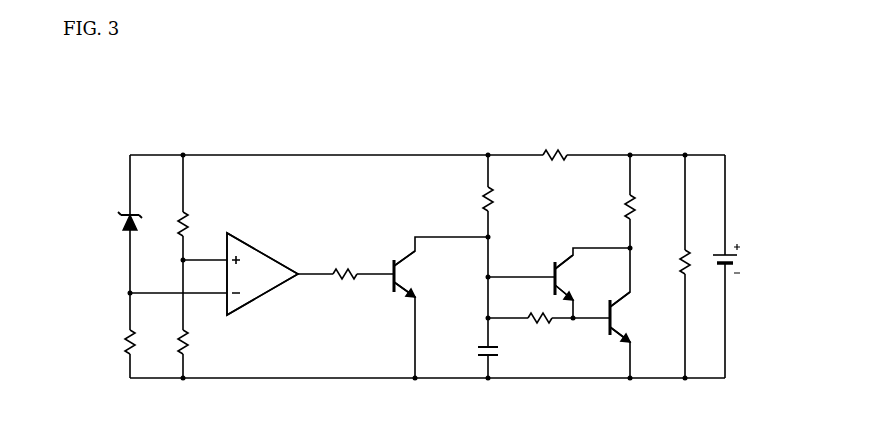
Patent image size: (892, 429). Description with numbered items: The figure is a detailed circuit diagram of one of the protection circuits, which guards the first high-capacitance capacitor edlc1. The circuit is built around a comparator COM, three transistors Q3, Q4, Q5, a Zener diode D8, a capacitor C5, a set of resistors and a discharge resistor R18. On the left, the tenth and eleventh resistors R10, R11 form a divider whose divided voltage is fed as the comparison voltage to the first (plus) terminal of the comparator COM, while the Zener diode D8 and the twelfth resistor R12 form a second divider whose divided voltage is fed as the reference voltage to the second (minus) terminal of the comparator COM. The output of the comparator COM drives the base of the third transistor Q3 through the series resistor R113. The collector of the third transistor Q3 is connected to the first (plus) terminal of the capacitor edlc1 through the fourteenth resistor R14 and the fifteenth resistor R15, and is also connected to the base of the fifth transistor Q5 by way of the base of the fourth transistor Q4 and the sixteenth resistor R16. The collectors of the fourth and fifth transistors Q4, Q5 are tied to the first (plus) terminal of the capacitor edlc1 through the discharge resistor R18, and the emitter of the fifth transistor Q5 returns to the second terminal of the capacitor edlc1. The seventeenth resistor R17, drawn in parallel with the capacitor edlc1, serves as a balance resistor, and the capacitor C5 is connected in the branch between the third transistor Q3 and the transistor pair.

The Zener diode D8 is at (112, 221).
The 10th resistor R10 is at (202, 219).
The 11th resistor R11 is at (206, 342).
The 12th resistor R12 is at (105, 342).
The comparator COM is at (265, 255).
The resistor R113 is at (351, 261).
The 3rd transistor Q3 is at (417, 274).
The 14th resistor R14 is at (463, 199).
The capacitor C5 is at (470, 351).
The 15th resistor R15 is at (554, 168).
The 16th resistor R16 is at (538, 333).
The 17th resistor R17 is at (662, 263).
The discharge resistor R18 is at (607, 208).
The 4th transistor Q4 is at (578, 277).
The 5th transistor Q5 is at (634, 317).
The 1st high-capacitance capacitor edlc1 is at (757, 258).